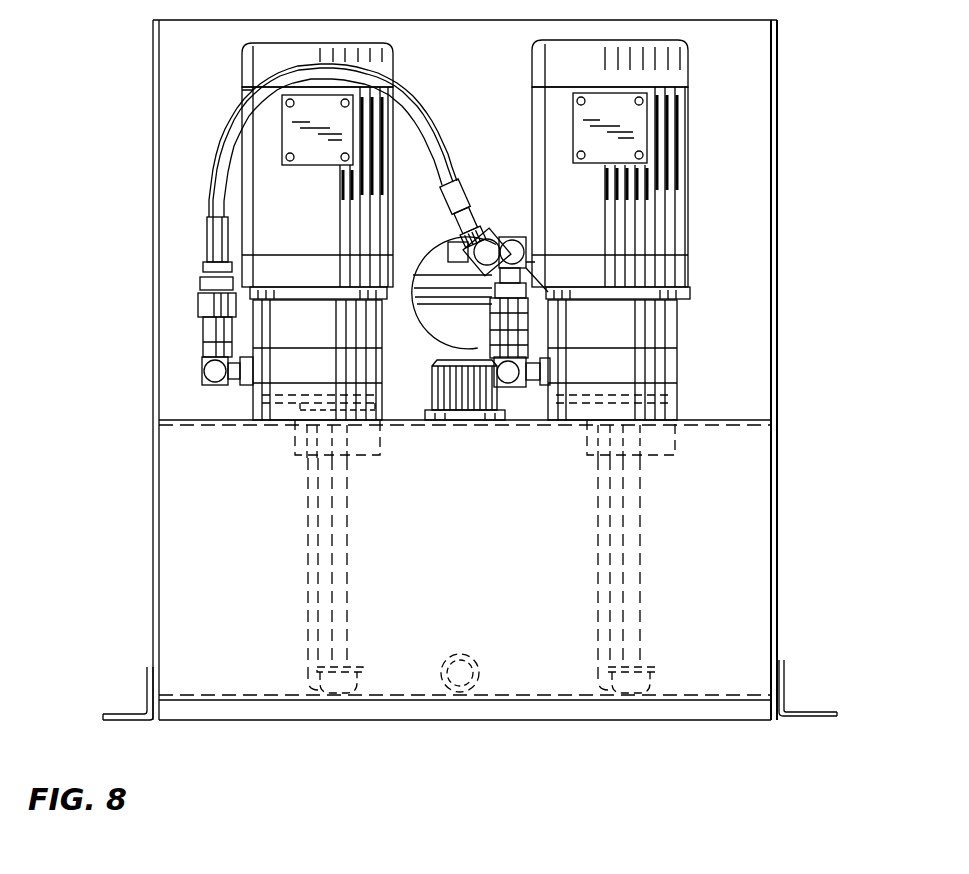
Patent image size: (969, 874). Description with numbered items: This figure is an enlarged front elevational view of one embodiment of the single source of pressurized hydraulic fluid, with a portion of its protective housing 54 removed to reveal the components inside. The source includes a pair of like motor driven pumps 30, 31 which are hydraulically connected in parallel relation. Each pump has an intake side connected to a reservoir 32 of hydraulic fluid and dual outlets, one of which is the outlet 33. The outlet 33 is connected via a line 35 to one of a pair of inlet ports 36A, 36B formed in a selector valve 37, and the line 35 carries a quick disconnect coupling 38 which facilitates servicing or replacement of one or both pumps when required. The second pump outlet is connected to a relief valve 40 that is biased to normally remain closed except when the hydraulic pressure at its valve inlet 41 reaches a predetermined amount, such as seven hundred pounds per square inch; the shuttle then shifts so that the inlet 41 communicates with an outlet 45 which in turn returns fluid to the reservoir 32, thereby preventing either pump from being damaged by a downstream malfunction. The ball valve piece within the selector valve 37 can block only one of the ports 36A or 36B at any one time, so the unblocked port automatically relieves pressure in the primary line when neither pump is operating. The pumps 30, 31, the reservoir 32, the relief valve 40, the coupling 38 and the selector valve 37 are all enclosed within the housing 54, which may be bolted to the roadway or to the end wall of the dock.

The motor driven pump 30 is at (243, 46).
The motor driven pump 31 is at (680, 56).
The reservoir 32 is at (160, 595).
The outlet 33 is at (249, 387).
The line 35 is at (420, 118).
The inlet port 36A is at (486, 238).
The inlet port 36B is at (512, 236).
The selector valve 37 is at (444, 250).
The quick disconnect coupling 38 is at (490, 307).
The relief valve 40 is at (293, 448).
The valve inlet 41 is at (345, 458).
The outlet 45 is at (306, 457).
The protective housing 54 is at (777, 292).